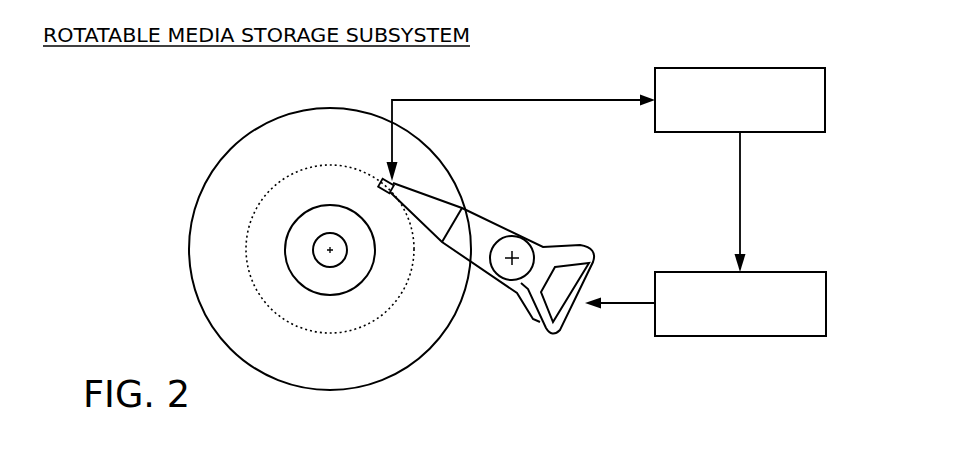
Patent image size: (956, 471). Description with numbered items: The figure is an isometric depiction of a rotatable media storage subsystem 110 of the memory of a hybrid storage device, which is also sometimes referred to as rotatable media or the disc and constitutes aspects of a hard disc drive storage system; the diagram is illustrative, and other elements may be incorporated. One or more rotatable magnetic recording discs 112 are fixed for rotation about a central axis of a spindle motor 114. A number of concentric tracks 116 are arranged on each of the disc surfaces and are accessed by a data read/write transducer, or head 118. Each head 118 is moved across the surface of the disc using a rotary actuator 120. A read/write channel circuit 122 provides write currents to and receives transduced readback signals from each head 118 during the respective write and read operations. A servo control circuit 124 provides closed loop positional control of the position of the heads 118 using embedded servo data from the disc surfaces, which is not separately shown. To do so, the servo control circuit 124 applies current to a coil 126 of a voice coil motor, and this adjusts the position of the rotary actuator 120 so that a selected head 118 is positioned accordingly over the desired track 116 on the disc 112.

The rotatable media storage subsystem 110 is at (212, 99).
The rotatable magnetic recording disc 112 is at (218, 293).
The spindle motor 114 is at (333, 223).
The concentric tracks 116 is at (333, 332).
The data read/write transducer (head) 118 is at (380, 180).
The rotary actuator 120 is at (549, 214).
The read/write (R/W) channel circuit 122 is at (740, 68).
The servo control circuit 124 is at (773, 272).
The coil 126 is at (593, 252).